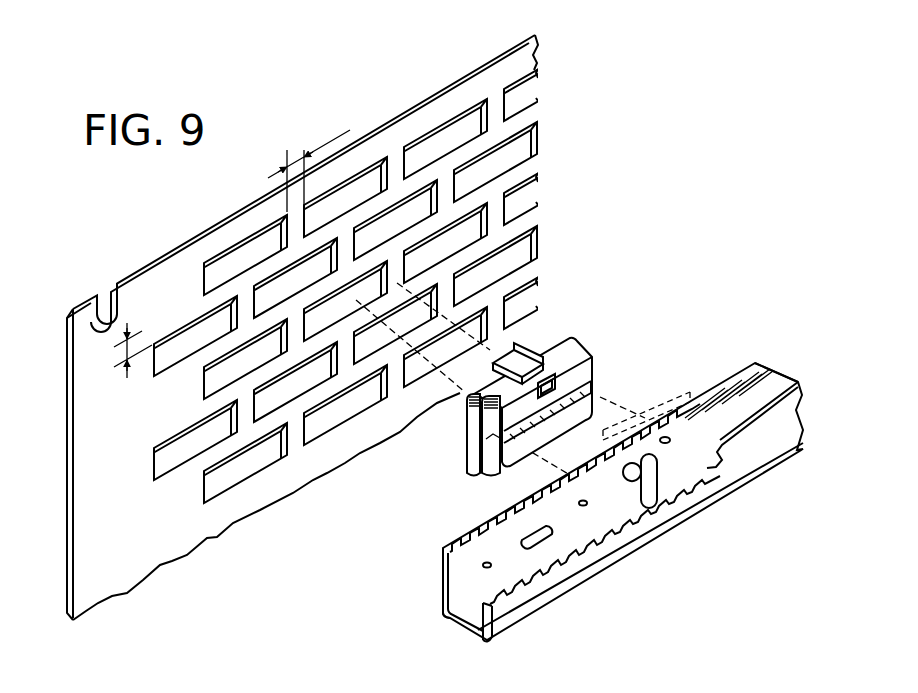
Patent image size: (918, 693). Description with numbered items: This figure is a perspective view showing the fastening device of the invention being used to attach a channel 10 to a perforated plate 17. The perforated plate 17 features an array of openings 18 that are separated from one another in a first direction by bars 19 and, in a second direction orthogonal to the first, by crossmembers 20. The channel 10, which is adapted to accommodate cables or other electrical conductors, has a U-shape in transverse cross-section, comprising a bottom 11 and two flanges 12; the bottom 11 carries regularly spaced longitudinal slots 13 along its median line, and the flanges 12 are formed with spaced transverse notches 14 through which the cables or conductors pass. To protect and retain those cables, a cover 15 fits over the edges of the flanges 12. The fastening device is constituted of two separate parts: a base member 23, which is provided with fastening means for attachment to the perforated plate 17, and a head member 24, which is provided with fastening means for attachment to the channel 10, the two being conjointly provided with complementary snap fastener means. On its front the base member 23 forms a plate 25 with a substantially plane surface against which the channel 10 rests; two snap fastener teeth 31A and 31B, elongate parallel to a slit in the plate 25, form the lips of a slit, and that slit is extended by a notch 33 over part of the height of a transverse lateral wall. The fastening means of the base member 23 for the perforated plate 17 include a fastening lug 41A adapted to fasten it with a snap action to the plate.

The channel 10 is at (601, 475).
The bottom 11 is at (464, 586).
The flanges 12 is at (777, 378).
The longitudinal slots 13 is at (630, 468).
The transverse notches 14 is at (737, 384).
The cover 15 is at (767, 461).
The perforated plate 17 is at (356, 325).
The openings 18 is at (221, 256).
The bars 19 is at (393, 151).
The crossmembers 20 is at (207, 306).
The base member 23 is at (550, 376).
The head member 24 is at (630, 508).
The plate 25 is at (560, 447).
The snap fastener tooth 31A is at (596, 382).
The snap fastener tooth 31B is at (600, 392).
The notch 33 is at (470, 452).
The fastening lug 41A is at (526, 349).